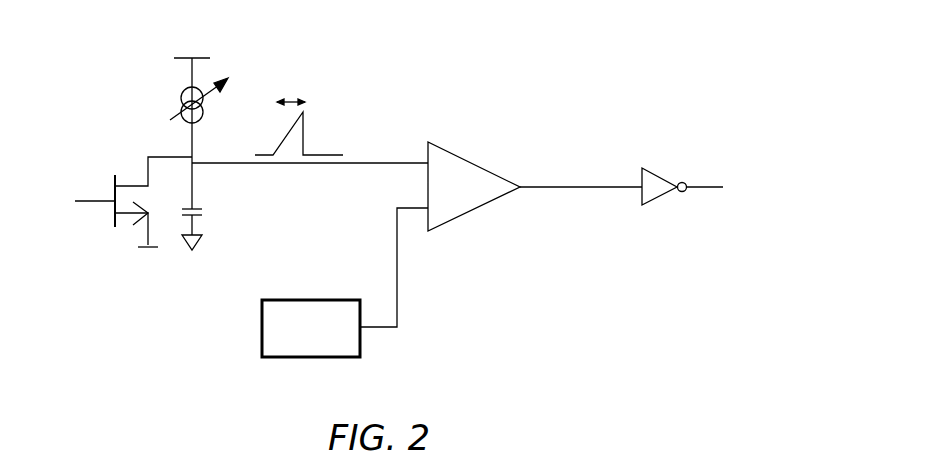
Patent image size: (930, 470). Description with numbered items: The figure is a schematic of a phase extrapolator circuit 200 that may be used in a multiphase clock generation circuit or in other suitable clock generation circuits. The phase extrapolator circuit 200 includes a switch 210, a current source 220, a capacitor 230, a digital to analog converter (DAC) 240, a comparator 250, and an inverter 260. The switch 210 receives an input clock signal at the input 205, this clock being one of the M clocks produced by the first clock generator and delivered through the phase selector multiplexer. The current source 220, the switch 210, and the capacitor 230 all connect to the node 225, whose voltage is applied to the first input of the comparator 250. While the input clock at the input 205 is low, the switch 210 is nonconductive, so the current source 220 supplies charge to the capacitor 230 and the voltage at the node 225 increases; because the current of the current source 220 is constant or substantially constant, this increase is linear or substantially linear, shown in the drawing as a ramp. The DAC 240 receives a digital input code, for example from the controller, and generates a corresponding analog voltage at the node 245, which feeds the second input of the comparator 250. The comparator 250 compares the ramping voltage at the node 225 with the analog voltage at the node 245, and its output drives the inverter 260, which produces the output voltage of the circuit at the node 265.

The phase extrapolator circuit 200 is at (608, 48).
The input 205 is at (73, 202).
The switch 210 is at (114, 176).
The current source 220 is at (181, 90).
The node 225 is at (310, 117).
The capacitor 230 is at (197, 208).
The digital to analog converter (DAC) 240 is at (300, 298).
The node 245 is at (394, 254).
The comparator 250 is at (468, 160).
The inverter 260 is at (657, 168).
The node 265 is at (728, 189).